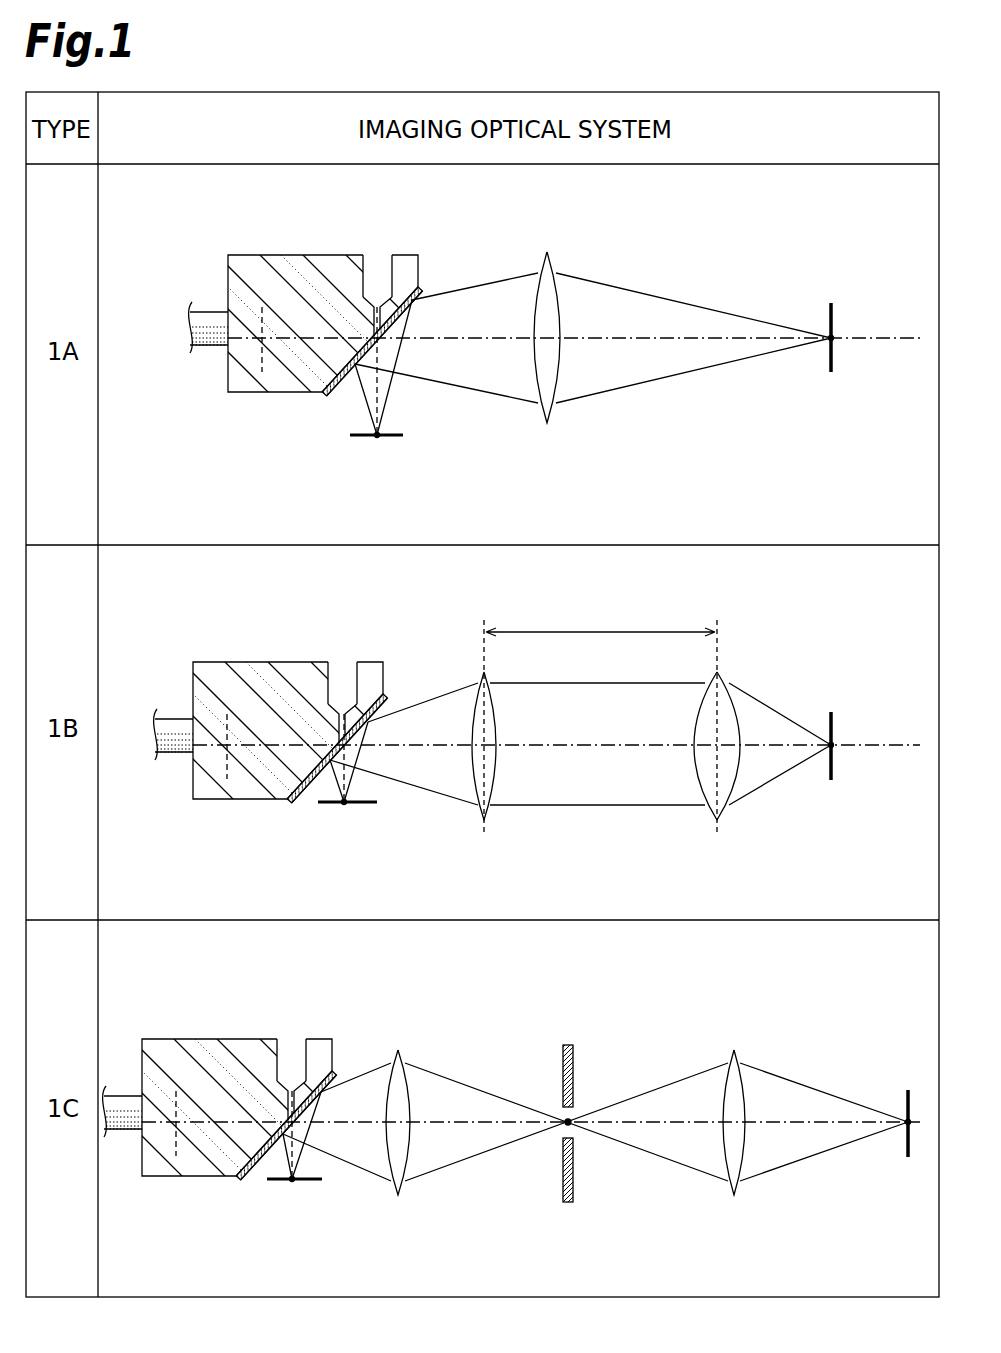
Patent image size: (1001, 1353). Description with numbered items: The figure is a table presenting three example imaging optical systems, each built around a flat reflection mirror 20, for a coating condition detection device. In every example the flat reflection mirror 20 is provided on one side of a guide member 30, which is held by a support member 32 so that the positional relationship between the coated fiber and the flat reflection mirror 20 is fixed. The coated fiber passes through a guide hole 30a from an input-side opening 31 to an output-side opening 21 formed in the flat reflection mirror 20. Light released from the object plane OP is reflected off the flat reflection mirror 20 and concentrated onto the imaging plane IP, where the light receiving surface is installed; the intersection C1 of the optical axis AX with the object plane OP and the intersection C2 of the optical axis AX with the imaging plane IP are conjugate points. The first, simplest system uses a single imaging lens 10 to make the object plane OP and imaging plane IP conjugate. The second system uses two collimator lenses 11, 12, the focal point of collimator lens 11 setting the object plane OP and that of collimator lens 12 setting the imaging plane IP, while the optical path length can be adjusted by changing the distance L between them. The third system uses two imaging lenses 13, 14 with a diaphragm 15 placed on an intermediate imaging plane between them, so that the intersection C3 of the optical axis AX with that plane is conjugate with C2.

The imaging lens 10 is at (550, 254).
The collimator lens 11 is at (488, 673).
The collimator lens 12 is at (722, 674).
The imaging lens 13 is at (397, 1048).
The imaging lens 14 is at (732, 1049).
The diaphragm 15 is at (567, 1044).
The flat reflection mirror 20 is at (421, 284).
The output-side opening 21 is at (388, 345).
The guide member 30 is at (288, 262).
The guide hole 30a is at (383, 277).
The input-side opening 31 is at (375, 253).
The support member 32 is at (205, 318).
The optical axis AX is at (650, 341).
The intersection of optical axis and object plane C1 is at (377, 438).
The intersection of optical axis and imaging plane C2 is at (835, 338).
The intersection of optical axis and intermediate imaging plane C3 is at (565, 1125).
The object plane OP is at (398, 438).
The imaging plane IP is at (834, 368).
The distance between collimator lenses L is at (600, 620).